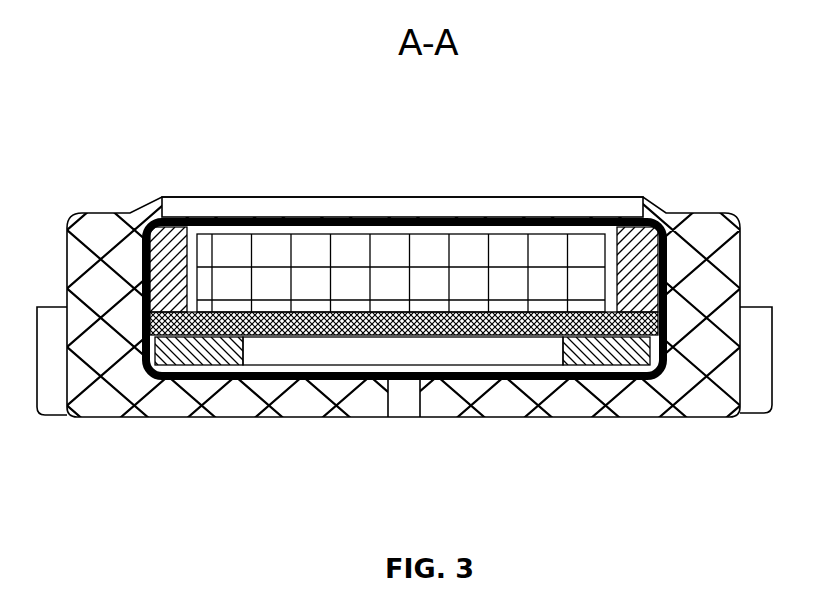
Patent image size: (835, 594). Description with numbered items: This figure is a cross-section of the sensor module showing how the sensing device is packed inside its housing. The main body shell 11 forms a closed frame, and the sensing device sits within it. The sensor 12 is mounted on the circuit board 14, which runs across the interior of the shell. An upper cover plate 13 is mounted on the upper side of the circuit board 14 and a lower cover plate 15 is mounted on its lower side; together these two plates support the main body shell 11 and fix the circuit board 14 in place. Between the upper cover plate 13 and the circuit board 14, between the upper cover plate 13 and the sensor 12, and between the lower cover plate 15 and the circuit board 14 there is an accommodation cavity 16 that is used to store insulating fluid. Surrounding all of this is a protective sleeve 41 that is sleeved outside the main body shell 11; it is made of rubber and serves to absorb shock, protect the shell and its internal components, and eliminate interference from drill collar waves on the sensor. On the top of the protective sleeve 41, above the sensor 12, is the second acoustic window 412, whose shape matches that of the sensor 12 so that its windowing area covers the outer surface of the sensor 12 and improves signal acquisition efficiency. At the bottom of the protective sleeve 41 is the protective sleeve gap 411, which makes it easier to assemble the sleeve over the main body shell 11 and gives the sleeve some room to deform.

The main body shell 11 is at (252, 218).
The sensor 12 is at (458, 272).
The upper cover plate 13 is at (640, 252).
The circuit board 14 is at (247, 327).
The lower cover plate 15 is at (600, 350).
The accommodation cavity 16 is at (335, 352).
The protective sleeve 41 is at (687, 260).
The protective sleeve gap 411 is at (405, 397).
The second acoustic window 412 is at (360, 212).